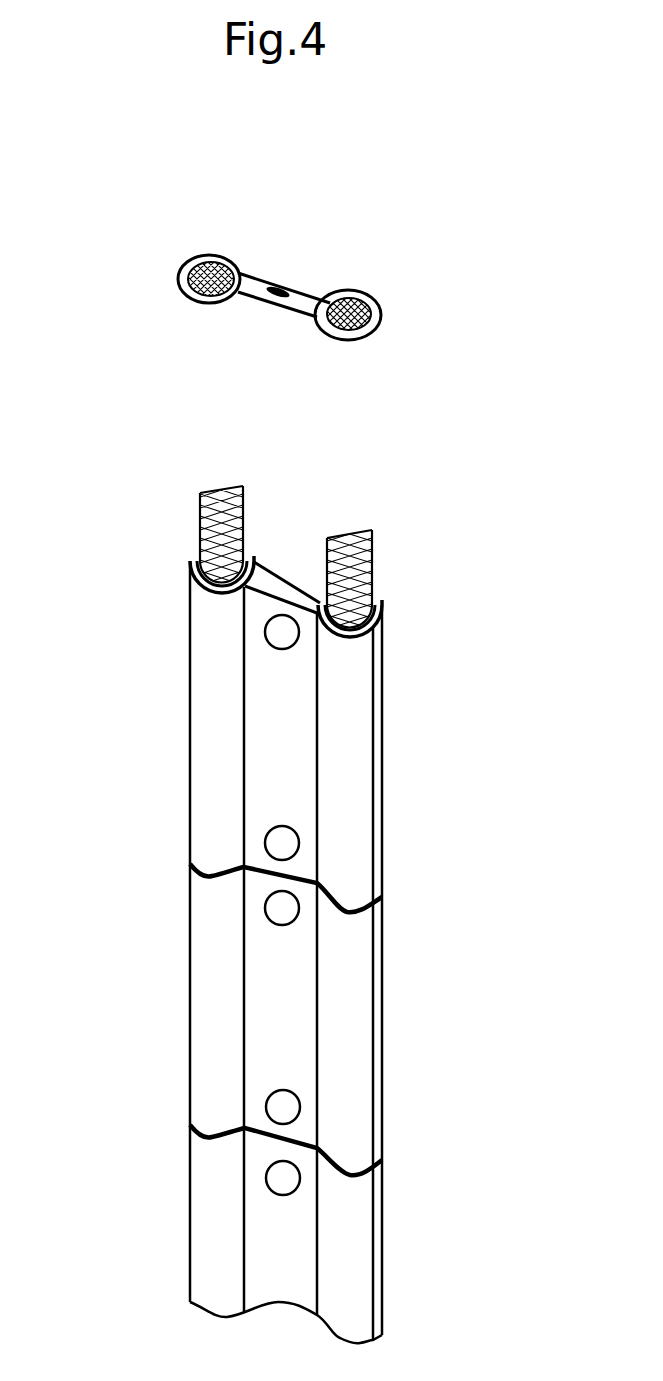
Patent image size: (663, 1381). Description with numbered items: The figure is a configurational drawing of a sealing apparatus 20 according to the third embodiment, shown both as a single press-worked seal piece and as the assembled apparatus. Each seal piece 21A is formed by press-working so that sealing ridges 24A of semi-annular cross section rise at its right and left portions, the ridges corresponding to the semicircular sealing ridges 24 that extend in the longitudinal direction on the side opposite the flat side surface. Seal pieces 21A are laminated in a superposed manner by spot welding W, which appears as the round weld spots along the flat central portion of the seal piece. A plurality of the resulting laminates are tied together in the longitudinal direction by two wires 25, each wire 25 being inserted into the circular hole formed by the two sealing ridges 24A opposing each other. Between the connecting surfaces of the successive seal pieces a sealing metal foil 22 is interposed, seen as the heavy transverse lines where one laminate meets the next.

The sealing apparatus 20 is at (390, 664).
The seal piece 21A is at (262, 277).
The sealing metal foil 22 is at (300, 887).
The sealing ridge 24 is at (345, 780).
The sealing ridge 24A is at (202, 258).
The wire 25 is at (348, 302).
The spot welding W is at (287, 282).